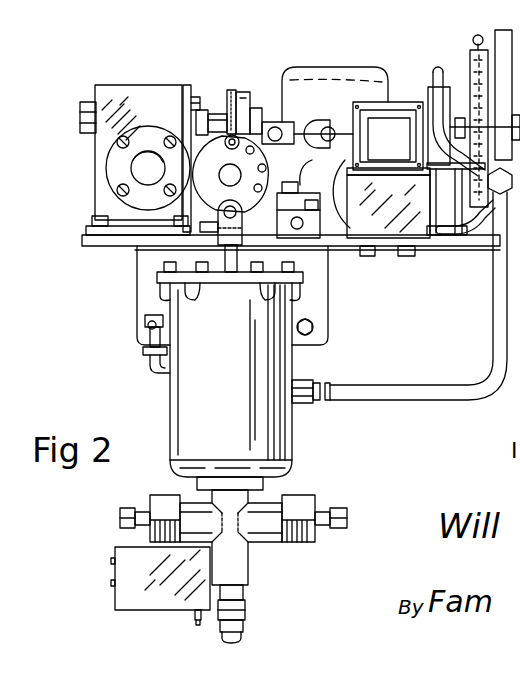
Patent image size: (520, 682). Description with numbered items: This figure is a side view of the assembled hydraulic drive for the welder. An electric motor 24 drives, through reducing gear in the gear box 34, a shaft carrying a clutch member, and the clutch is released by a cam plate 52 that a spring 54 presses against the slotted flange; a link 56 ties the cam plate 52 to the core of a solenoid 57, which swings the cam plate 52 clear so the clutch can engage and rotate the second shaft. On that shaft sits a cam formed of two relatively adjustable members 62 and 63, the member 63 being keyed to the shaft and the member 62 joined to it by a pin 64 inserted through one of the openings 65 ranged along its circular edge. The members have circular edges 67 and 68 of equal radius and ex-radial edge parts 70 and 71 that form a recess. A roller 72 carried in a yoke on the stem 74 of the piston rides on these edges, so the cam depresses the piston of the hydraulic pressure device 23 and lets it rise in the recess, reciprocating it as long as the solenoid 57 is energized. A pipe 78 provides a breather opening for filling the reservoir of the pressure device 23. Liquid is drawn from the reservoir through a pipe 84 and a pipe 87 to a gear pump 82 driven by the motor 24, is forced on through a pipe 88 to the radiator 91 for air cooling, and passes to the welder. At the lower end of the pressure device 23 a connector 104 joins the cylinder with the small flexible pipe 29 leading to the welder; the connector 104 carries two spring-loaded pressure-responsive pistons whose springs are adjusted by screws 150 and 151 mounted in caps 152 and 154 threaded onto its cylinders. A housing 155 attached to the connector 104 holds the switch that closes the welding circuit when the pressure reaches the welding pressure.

The hydraulic pressure device 23 is at (187, 398).
The electric motor 24 is at (358, 88).
The pipe 29 is at (243, 633).
The gear box 34 is at (118, 163).
The cam plate 52 is at (327, 233).
The spring 54 is at (345, 250).
The link 56 is at (290, 130).
The solenoid 57 is at (396, 115).
The cam member 62 is at (258, 132).
The cam member 63 is at (211, 110).
The pin 64 is at (233, 135).
The openings 65 is at (275, 148).
The circular edge 67 is at (190, 90).
The circular edge 68 is at (270, 190).
The edge part 70 is at (178, 235).
The edge part 71 is at (320, 235).
The roller 72 is at (216, 233).
The stem 74 is at (234, 262).
The pipe 78 is at (145, 343).
The gear pump 82 is at (431, 92).
The pipe 84 is at (436, 386).
The pipe 87 is at (439, 68).
The pipe 88 is at (466, 230).
The radiator 91 is at (478, 36).
The connector 104 is at (245, 563).
The screw 150 is at (133, 510).
The screw 151 is at (330, 530).
The cap 152 is at (167, 505).
The cap 154 is at (300, 512).
The housing 155 is at (150, 593).